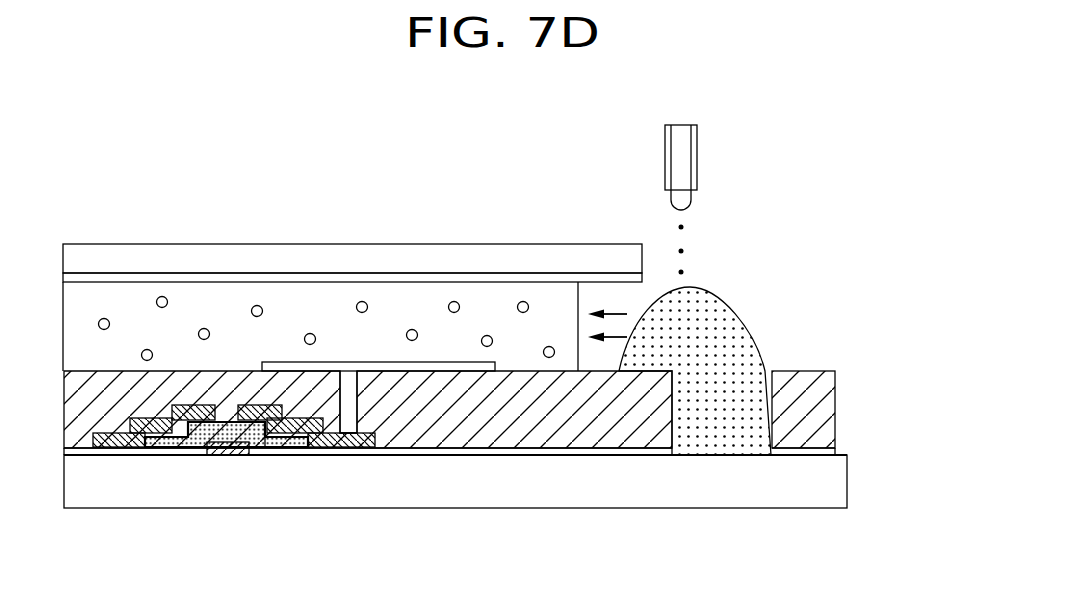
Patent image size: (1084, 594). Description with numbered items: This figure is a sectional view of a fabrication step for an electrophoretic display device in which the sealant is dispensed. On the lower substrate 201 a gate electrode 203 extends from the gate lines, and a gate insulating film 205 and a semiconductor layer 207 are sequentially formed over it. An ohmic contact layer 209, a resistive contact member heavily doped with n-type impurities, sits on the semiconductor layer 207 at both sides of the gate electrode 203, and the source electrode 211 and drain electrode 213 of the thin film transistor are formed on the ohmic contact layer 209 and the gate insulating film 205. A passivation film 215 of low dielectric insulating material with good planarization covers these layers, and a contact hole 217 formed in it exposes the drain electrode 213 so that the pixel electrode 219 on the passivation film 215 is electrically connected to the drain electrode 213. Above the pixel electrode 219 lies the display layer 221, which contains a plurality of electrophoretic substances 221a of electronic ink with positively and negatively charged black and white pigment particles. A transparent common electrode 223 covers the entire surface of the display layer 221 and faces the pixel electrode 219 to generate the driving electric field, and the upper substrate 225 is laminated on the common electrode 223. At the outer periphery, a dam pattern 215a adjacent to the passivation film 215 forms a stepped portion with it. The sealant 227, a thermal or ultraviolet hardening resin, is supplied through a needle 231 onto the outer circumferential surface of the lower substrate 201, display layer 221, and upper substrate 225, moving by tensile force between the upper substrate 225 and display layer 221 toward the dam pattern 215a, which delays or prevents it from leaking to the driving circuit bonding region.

The lower substrate 201 is at (838, 492).
The gate electrode 203 is at (227, 450).
The gate insulating film 205 is at (532, 452).
The semiconductor layer 207 is at (262, 445).
The ohmic contact layer 209 is at (295, 443).
The source electrode 211 is at (114, 445).
The drain electrode 213 is at (343, 443).
The passivation film 215 is at (468, 437).
The dam pattern 215a is at (827, 405).
The contact hole 217 is at (357, 396).
The pixel electrode 219 is at (292, 367).
The display layer 221 is at (215, 290).
The electrophoretic substance 221a is at (162, 296).
The common electrode 223 is at (492, 280).
The upper substrate 225 is at (538, 257).
The sealant 227 is at (728, 327).
The needle 231 is at (687, 162).